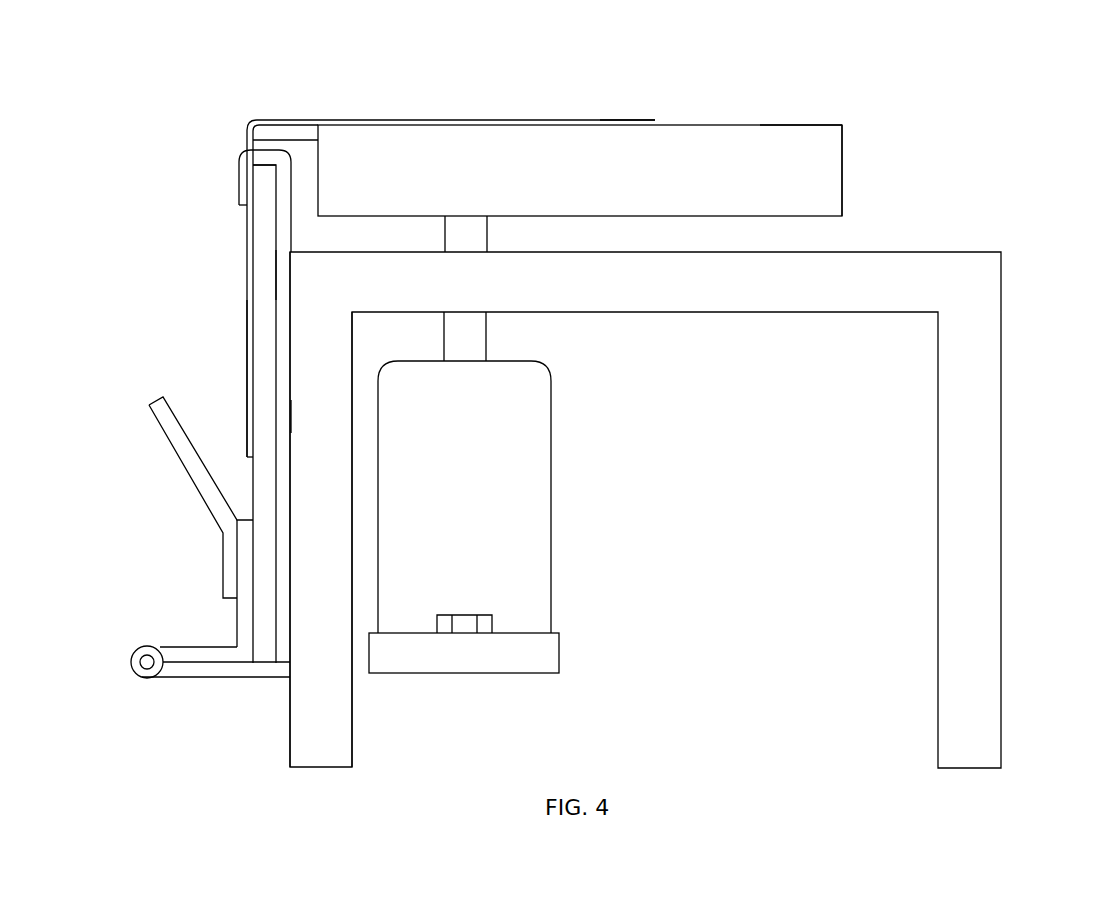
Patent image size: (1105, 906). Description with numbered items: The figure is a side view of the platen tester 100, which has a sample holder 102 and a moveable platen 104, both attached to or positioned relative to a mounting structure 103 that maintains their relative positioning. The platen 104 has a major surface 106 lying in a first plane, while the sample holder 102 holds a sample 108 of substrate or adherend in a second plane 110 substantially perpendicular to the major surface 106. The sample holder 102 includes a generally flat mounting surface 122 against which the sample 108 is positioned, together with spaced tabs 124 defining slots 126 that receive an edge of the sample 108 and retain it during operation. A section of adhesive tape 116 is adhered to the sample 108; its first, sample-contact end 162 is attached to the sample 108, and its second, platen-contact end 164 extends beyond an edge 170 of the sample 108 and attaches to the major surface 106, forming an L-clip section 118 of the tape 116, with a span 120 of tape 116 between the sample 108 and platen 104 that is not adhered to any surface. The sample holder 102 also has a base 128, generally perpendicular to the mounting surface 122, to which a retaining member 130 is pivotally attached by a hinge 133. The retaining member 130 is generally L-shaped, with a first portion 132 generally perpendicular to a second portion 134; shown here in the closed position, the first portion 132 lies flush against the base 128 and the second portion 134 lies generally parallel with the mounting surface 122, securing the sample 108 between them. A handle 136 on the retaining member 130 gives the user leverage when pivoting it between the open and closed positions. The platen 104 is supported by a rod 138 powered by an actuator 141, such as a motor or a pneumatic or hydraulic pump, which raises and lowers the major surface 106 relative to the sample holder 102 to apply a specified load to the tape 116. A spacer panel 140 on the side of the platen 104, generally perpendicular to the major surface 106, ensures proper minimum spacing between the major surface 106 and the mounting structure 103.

The platen tester 100 is at (1003, 107).
The sample holder 102 is at (282, 657).
The mounting structure 103 is at (992, 280).
The moveable platen 104 is at (770, 137).
The major surface 106 is at (700, 125).
The sample 108 is at (258, 258).
The second plane 110 is at (275, 300).
The adhesive tape 116 is at (415, 120).
The L-clip section 118 is at (247, 128).
The span 120 is at (250, 148).
The mounting surface 122 is at (291, 433).
The tabs 124 is at (242, 182).
The slots 126 is at (266, 183).
The base 128 is at (190, 678).
The retaining member 130 is at (163, 648).
The first portion 132 is at (214, 656).
The hinge 133 is at (134, 665).
The second portion 134 is at (240, 608).
The handle 136 is at (175, 437).
The rod 138 is at (473, 340).
The spacer panel 140 is at (833, 172).
The actuator 141 is at (548, 480).
The sample-contact end 162 is at (247, 388).
The platen-contact end 164 is at (608, 120).
The edge 170 is at (266, 165).